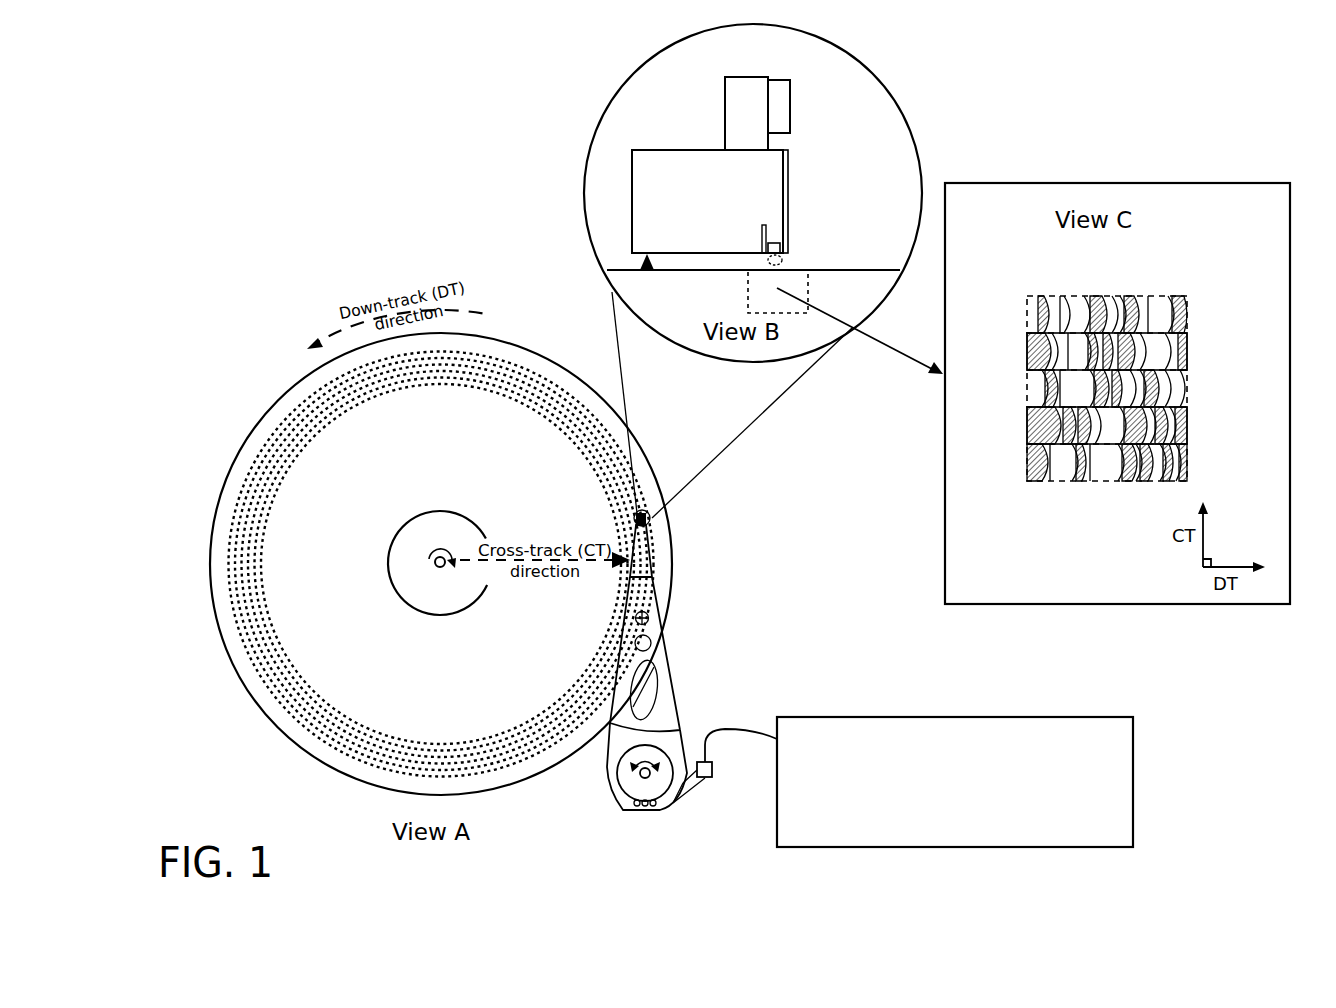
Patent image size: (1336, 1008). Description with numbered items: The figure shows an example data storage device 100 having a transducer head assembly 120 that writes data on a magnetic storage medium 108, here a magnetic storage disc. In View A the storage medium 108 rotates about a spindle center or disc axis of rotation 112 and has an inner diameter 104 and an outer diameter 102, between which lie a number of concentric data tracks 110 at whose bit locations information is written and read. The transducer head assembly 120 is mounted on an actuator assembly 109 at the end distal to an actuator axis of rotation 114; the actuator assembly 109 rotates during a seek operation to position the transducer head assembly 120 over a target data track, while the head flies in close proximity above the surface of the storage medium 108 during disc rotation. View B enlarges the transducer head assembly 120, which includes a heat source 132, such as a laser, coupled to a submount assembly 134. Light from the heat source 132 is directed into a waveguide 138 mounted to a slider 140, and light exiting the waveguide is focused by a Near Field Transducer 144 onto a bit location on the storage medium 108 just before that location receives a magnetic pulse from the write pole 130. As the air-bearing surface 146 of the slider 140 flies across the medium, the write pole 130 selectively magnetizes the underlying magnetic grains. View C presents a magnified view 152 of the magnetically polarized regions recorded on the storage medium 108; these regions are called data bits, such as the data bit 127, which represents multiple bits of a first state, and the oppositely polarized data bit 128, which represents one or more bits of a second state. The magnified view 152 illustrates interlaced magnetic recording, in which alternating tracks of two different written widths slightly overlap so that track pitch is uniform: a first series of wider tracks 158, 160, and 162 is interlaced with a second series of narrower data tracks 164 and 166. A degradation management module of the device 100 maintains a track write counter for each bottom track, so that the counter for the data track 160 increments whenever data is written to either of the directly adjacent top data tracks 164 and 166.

The data storage device 100 is at (345, 116).
The outer diameter 102 is at (284, 392).
The inner diameter 104 is at (388, 570).
The magnetic storage medium 108 is at (297, 750).
The actuator assembly 109 is at (662, 655).
The data tracks 110 is at (263, 678).
The disc axis of rotation 112 is at (432, 560).
The actuator axis of rotation 114 is at (640, 775).
The transducer head assembly 120 is at (650, 520).
The data bit 127 is at (1063, 307).
The data bit 128 is at (1108, 293).
The write pole 130 is at (767, 247).
The heat source 132 is at (784, 80).
The submount assembly 134 is at (725, 125).
The waveguide 138 is at (785, 180).
The slider 140 is at (707, 148).
The Near Field Transducer 144 is at (772, 242).
The air-bearing surface 146 is at (647, 270).
The magnified view 152 is at (1027, 445).
The track 158 is at (1200, 308).
The track 160 is at (1200, 390).
The track 162 is at (1200, 465).
The interlaced data track 164 is at (1200, 350).
The interlaced data track 166 is at (1200, 427).